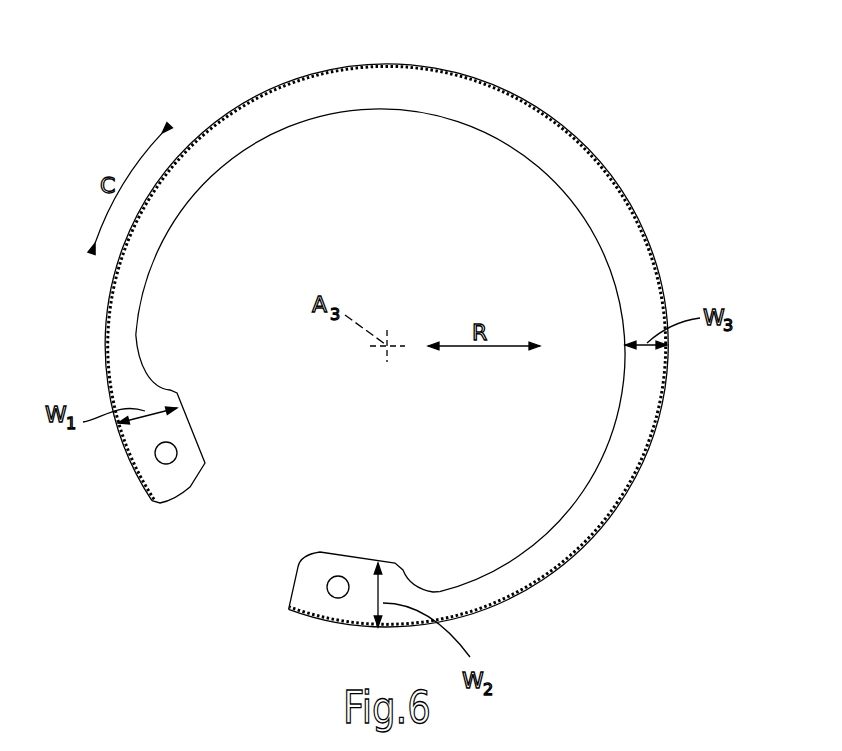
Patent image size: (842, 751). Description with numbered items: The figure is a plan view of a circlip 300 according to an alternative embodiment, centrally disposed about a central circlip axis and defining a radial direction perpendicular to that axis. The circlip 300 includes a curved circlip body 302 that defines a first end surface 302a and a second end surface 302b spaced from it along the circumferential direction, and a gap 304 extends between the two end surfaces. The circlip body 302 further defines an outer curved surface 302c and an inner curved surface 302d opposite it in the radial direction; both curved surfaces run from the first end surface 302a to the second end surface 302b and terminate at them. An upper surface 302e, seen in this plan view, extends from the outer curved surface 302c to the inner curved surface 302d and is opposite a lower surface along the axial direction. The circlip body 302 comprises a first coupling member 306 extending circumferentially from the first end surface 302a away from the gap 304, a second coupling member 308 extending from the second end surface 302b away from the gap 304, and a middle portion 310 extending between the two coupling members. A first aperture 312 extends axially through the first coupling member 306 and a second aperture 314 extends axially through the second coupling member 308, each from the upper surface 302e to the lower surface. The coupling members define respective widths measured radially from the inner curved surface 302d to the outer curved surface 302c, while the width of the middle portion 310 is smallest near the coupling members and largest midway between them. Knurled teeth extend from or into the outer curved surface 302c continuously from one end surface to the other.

The circlip 300 is at (670, 113).
The circlip body 302 is at (453, 70).
The first end surface 302a is at (207, 453).
The second end surface 302b is at (331, 559).
The outer curved surface 302c is at (577, 132).
The inner curved surface 302d is at (593, 235).
The upper surface 302e is at (607, 203).
The gap 304 is at (217, 565).
The first coupling member 306 is at (175, 430).
The second coupling member 308 is at (367, 572).
The middle portion 310 is at (345, 97).
The first aperture 312 is at (175, 453).
The second aperture 314 is at (333, 573).